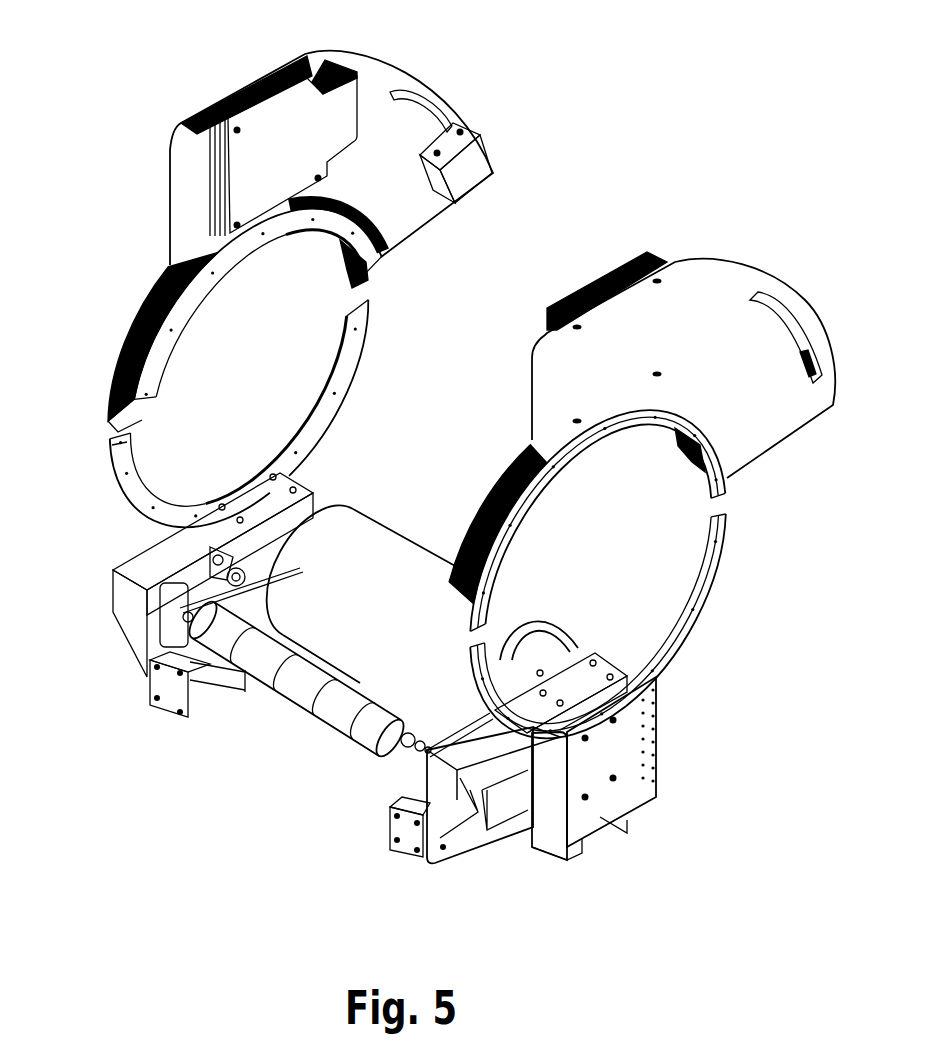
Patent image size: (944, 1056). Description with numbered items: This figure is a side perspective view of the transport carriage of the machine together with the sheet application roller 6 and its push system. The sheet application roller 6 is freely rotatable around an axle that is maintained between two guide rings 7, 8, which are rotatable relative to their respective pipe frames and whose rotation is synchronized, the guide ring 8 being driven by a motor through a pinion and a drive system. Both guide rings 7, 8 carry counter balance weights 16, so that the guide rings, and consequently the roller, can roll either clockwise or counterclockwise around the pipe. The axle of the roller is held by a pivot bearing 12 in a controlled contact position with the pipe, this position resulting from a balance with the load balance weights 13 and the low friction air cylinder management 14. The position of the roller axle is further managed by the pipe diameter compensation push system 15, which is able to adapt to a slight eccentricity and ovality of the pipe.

The counter balance weights 16 is at (278, 128).
The guide ring 8 is at (127, 463).
The pipe diameter compensation push system 15 is at (303, 490).
The sheet application roller 6 is at (383, 557).
The pivot bearing 12 is at (193, 565).
The low friction air cylinder management 14 is at (229, 673).
The load balance weights 13 is at (297, 690).
The guide ring 7 is at (713, 560).